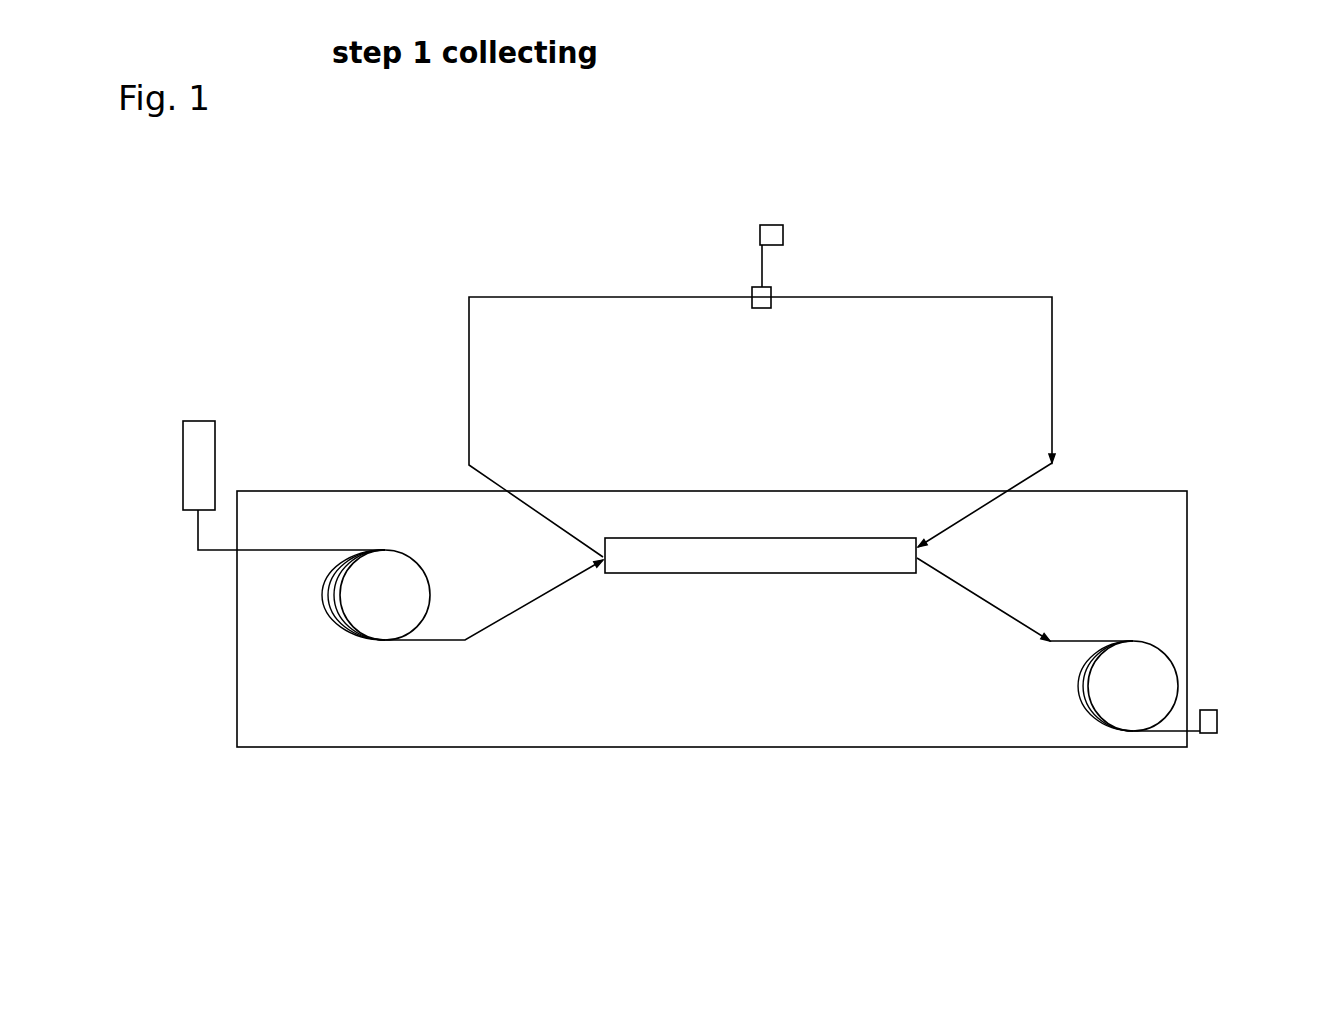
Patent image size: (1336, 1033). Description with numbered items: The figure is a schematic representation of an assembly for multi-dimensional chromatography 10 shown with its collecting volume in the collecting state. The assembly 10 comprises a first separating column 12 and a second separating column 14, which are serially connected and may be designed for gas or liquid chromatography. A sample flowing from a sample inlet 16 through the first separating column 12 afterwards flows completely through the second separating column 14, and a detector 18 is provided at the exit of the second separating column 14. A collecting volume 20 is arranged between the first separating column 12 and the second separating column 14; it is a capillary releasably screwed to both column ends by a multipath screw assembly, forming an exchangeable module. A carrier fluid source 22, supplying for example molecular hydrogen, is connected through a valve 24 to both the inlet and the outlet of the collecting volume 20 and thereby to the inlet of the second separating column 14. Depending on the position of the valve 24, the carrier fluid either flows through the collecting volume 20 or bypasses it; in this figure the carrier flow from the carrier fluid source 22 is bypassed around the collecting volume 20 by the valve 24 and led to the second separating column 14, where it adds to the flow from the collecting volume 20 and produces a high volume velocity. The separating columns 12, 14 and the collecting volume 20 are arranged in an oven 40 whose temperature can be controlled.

The assembly for multi-dimensional chromatography 10 is at (1113, 257).
The first separating column 12 is at (318, 597).
The second separating column 14 is at (1155, 663).
The sample inlet 16 is at (195, 437).
The detector 18 is at (1215, 720).
The collecting volume 20 is at (902, 563).
The carrier fluid source 22 is at (772, 233).
The valve 24 is at (753, 293).
The oven 40 is at (1117, 491).